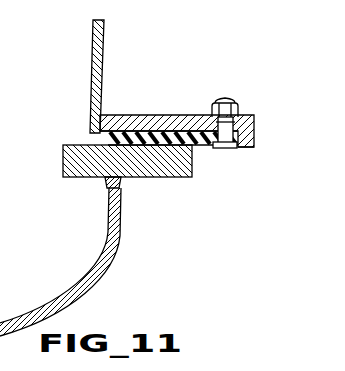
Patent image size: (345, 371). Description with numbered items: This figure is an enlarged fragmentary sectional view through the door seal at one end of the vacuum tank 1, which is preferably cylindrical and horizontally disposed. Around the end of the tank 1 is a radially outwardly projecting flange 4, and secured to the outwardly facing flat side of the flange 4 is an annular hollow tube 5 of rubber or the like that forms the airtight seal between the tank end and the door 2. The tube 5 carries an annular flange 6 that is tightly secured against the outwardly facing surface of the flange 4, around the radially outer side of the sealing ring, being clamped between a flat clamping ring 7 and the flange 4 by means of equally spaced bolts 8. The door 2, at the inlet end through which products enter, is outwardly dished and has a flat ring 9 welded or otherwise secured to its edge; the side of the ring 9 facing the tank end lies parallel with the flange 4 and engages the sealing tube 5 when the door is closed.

The vacuum tank 1 is at (114, 39).
The door 2 is at (120, 232).
The flange 4 is at (167, 124).
The annular hollow tube 5 is at (122, 130).
The annular flange 6 is at (256, 135).
The flat clamping ring 7 is at (249, 148).
The bolts 8 is at (237, 102).
The flat ring 9 is at (193, 174).